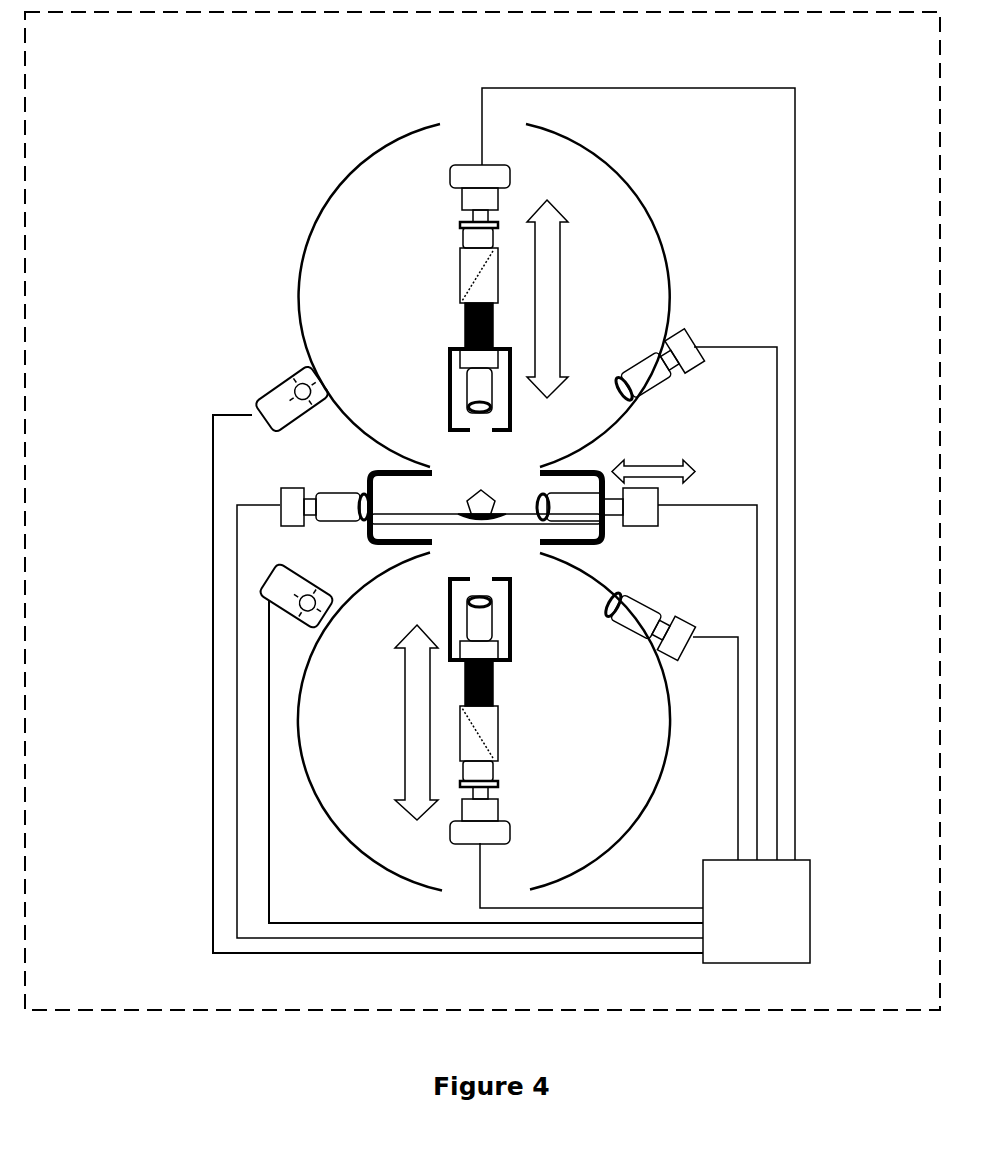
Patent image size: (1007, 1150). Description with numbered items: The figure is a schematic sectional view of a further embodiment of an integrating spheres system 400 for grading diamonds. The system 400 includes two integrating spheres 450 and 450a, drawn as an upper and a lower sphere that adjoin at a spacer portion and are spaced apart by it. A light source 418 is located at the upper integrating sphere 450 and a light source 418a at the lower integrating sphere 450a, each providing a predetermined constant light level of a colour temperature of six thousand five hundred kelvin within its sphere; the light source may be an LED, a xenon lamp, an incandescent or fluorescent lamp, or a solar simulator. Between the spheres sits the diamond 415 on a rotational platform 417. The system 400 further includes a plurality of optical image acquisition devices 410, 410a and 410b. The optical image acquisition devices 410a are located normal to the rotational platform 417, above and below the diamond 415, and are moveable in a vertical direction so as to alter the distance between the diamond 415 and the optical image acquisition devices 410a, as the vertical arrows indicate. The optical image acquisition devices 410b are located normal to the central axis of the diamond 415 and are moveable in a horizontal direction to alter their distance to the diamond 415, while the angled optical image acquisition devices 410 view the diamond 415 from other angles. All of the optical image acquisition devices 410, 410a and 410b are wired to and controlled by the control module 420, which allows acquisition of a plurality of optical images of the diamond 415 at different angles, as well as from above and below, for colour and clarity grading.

The system 400 is at (173, 13).
The optical image acquisition device 410 is at (640, 392).
The optical image acquisition device 410a is at (463, 243).
The optical image acquisition device 410b is at (278, 494).
The diamond 415 is at (467, 500).
The rotational platform 417 is at (397, 521).
The light source 418 is at (252, 402).
The light source 418a is at (257, 592).
The control module 420 is at (812, 928).
The integrating sphere 450 is at (298, 278).
The integrating sphere 450a is at (297, 745).